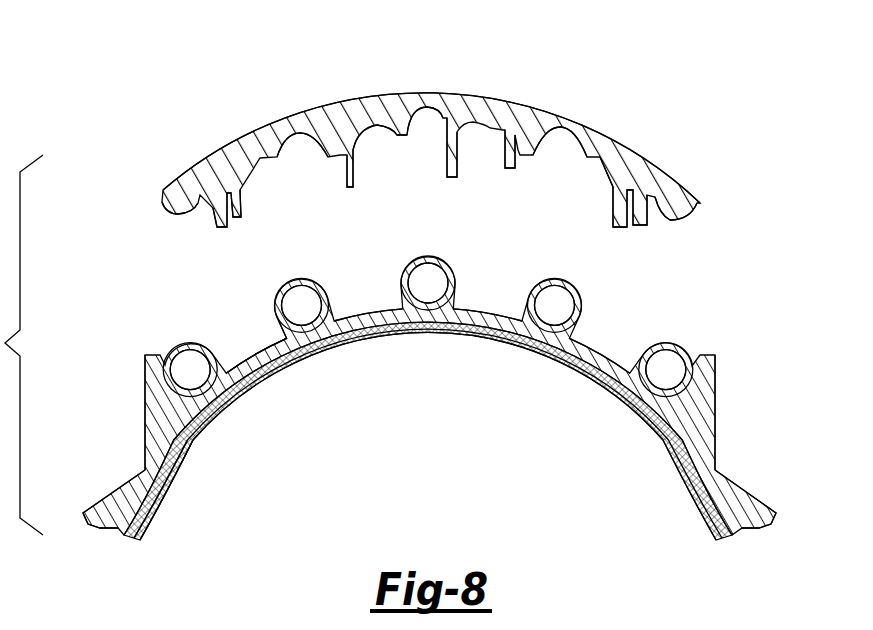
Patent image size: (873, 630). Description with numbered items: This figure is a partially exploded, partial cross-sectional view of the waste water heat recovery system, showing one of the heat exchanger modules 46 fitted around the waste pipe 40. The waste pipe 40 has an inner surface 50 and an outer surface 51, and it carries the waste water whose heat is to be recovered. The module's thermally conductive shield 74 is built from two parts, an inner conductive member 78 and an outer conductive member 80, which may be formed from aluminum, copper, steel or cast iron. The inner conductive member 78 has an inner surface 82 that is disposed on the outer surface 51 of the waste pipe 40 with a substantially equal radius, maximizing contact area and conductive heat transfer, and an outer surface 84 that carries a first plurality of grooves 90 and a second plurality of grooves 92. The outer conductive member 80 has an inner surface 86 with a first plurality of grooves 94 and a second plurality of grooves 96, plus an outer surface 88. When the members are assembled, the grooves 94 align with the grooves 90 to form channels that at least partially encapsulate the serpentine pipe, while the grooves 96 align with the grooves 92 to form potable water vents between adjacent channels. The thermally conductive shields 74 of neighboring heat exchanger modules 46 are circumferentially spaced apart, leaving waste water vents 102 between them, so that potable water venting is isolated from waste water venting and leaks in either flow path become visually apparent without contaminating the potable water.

The waste pipe 40 is at (160, 487).
The heat exchanger modules 46 is at (656, 105).
The inner surface 50 is at (185, 455).
The outer surface 51 is at (173, 443).
The thermally conductive shield 74 is at (743, 303).
The inner conductive member 78 is at (719, 407).
The outer conductive member 80 is at (541, 105).
The inner surface 82 is at (352, 342).
The outer surface 84 is at (262, 320).
The inner surface 86 is at (383, 132).
The outer surface 88 is at (427, 92).
The first plurality of grooves 90 is at (193, 369).
The second plurality of grooves 92 is at (253, 353).
The first plurality of grooves 94 is at (190, 212).
The second plurality of grooves 96 is at (238, 216).
The waste water vents 102 is at (143, 470).